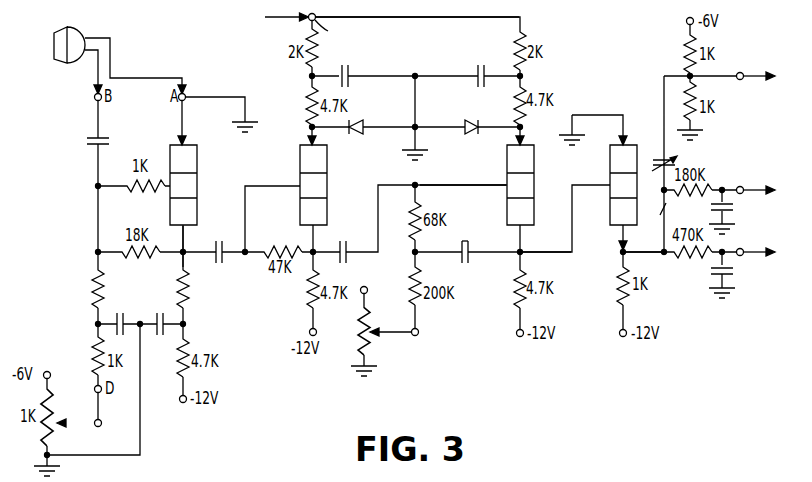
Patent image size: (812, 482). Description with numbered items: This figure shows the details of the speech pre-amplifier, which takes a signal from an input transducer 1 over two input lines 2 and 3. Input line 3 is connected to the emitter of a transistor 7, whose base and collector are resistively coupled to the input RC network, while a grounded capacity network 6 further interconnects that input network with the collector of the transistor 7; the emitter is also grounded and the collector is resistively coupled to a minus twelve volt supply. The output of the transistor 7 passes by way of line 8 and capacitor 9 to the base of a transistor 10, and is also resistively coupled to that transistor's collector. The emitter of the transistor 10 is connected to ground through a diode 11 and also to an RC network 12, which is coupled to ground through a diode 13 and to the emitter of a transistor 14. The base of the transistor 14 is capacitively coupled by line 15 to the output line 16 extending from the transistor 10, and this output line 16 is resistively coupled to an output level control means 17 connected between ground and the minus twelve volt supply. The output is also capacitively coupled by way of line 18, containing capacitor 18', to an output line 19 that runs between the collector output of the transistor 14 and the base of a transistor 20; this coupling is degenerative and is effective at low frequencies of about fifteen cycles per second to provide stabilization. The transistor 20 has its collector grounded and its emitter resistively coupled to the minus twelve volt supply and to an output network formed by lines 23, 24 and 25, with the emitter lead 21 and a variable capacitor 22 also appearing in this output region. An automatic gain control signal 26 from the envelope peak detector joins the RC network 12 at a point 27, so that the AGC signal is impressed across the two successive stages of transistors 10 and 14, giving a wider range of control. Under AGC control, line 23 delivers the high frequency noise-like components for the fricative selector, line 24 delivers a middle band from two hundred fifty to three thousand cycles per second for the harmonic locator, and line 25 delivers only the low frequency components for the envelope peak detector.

The microphone transducer 1 is at (92, 24).
The input line 2 is at (97, 65).
The input line 3 is at (112, 62).
The grounded capacity network 6 is at (148, 294).
The transistor 7 is at (198, 198).
The line 8 is at (205, 255).
The capacitor 9 is at (223, 262).
The transistor 10 is at (329, 197).
The diode 11 is at (357, 136).
The RC network 12 is at (423, 51).
The diode 13 is at (472, 136).
The transistor 14 is at (535, 197).
The line 15 is at (476, 185).
The output line 16 is at (348, 246).
The output level control means 17 is at (397, 311).
The line 18 is at (467, 258).
The capacitor 18' is at (475, 225).
The output line 19 is at (525, 243).
The transistor 20 is at (610, 176).
The output lead 21 is at (643, 253).
The variable capacitor 22 is at (661, 176).
The output line 23 is at (757, 78).
The output line 24 is at (756, 184).
The output line 25 is at (756, 246).
The automatic gain control signal 26 is at (281, 17).
The point 27 is at (493, 17).